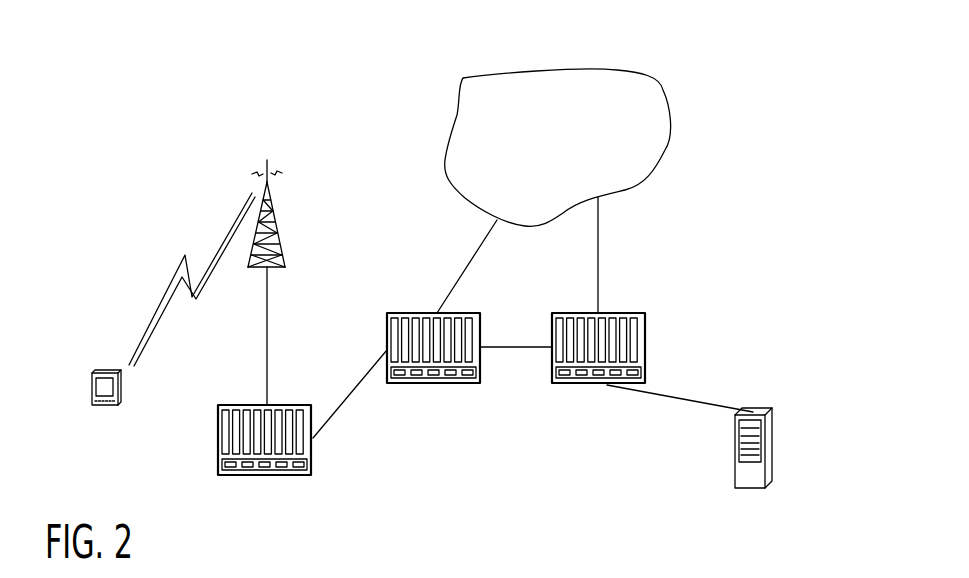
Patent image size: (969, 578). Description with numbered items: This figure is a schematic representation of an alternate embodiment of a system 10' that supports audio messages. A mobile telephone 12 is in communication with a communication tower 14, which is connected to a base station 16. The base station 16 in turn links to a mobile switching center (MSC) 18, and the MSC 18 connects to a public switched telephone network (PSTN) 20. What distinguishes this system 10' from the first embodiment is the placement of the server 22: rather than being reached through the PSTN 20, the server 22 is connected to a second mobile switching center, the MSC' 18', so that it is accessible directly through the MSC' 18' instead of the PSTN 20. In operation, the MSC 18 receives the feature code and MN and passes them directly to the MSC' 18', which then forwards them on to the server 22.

The system 10' is at (287, 67).
The mobile telephone 12 is at (91, 382).
The communication tower 14 is at (254, 189).
The base station 16 is at (313, 458).
The mobile switching center (MSC) 18 is at (447, 348).
The MSC' 18' is at (617, 347).
The public switched telephone network (PSTN) 20 is at (666, 87).
The server 22 is at (733, 443).